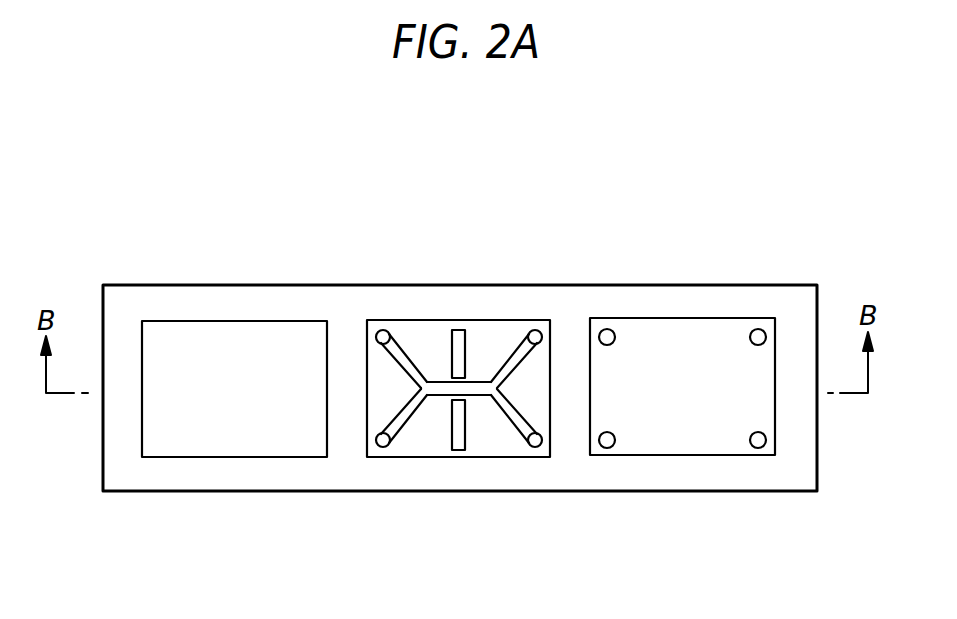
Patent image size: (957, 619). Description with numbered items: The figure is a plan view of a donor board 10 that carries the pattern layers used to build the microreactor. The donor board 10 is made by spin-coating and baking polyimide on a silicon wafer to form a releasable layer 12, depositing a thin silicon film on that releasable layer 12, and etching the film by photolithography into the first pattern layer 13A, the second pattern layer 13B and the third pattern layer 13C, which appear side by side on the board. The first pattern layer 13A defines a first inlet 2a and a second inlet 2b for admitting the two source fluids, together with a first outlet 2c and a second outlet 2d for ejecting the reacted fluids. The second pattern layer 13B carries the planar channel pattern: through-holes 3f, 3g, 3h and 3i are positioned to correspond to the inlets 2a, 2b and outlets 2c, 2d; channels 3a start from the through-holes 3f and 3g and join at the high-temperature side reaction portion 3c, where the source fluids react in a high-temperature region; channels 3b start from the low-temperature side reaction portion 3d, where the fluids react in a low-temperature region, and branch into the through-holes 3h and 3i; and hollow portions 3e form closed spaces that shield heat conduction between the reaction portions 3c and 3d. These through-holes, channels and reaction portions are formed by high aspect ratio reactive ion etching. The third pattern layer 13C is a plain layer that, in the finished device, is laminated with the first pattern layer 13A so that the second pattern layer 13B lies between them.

The donor board 10 is at (282, 209).
The releasable layer 12 is at (788, 460).
The first pattern layer 13A is at (655, 347).
The second pattern layer 13B is at (493, 345).
The third pattern layer 13C is at (198, 345).
The first inlet 2a is at (759, 329).
The second inlet 2b is at (761, 445).
The first outlet 2c is at (607, 329).
The second outlet 2d is at (611, 444).
The channels 3a is at (520, 358).
The channels 3b is at (403, 376).
The high-temperature side reaction portion 3c is at (475, 397).
The low-temperature side reaction portion 3d is at (432, 398).
The hollow portions 3e is at (457, 330).
The through-hole 3f is at (535, 330).
The through-hole 3g is at (535, 447).
The through-hole 3h is at (383, 330).
The through-hole 3i is at (383, 447).